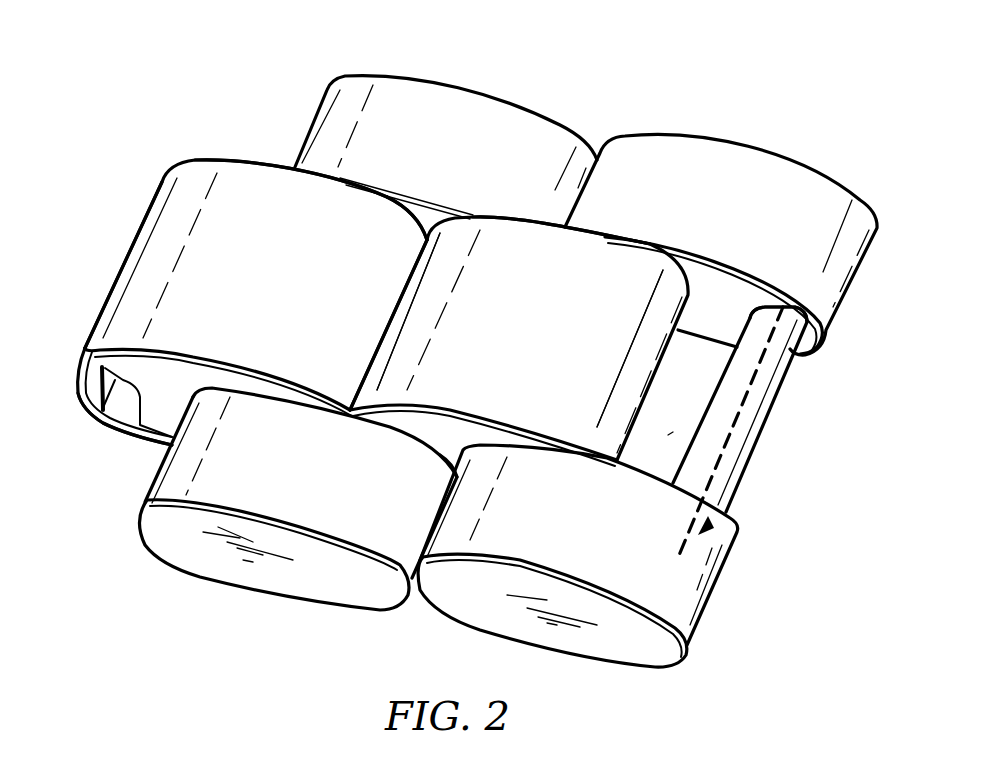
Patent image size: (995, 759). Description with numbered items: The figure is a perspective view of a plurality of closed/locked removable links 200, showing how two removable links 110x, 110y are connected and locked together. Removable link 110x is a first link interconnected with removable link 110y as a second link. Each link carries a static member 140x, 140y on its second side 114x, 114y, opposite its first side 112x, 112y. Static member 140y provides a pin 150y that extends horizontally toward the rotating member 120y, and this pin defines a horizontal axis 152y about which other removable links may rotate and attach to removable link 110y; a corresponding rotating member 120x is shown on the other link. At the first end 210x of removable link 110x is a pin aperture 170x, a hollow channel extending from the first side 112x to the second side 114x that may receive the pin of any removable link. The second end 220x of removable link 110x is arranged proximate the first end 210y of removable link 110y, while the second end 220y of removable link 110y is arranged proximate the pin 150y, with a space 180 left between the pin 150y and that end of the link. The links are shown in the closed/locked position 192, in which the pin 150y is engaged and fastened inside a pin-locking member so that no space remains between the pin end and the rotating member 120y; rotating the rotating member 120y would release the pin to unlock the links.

The closed/locked removable links 200 is at (284, 36).
The removable link 110x is at (220, 222).
The removable link 110y is at (538, 275).
The first side 112x is at (256, 160).
The first side 112y is at (600, 233).
The second side 114x is at (173, 408).
The second side 114y is at (457, 450).
The rotating member 120x is at (470, 120).
The rotating member 120y is at (743, 180).
The static member 140x is at (297, 493).
The static member 140y is at (573, 547).
The pin 150y is at (720, 487).
The horizontal axis 152y is at (738, 420).
The pin aperture 170x is at (122, 405).
The space 180 is at (668, 435).
The closed/locked position 192 is at (424, 215).
The first end 210x is at (137, 233).
The first end 210y is at (415, 260).
The second end 220x is at (347, 347).
The second end 220y is at (640, 343).